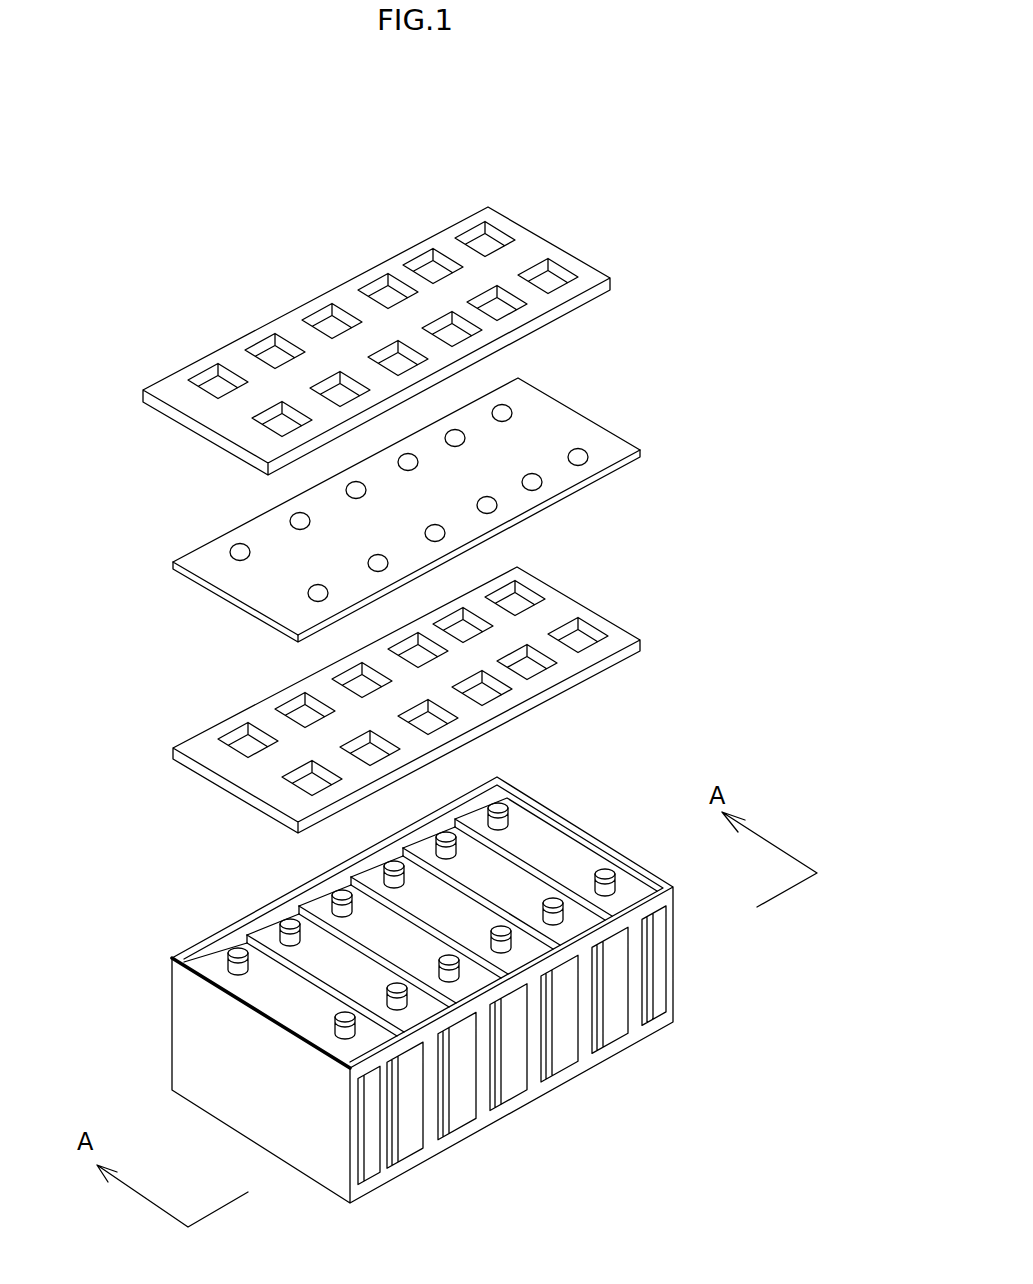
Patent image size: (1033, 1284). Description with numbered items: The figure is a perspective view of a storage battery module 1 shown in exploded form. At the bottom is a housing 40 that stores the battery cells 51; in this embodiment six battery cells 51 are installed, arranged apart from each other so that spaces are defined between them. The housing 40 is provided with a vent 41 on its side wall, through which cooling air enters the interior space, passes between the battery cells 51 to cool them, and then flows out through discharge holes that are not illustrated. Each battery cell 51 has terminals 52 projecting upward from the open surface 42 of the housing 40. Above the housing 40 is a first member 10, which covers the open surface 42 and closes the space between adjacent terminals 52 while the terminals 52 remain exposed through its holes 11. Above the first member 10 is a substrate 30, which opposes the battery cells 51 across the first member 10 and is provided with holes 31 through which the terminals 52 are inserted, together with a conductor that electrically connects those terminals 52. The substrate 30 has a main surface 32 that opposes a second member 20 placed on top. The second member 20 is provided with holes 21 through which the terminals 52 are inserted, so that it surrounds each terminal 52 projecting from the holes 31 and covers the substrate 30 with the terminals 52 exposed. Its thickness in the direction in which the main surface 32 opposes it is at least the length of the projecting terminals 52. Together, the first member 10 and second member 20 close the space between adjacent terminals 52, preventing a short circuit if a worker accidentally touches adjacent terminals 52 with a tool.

The storage battery module 1 is at (366, 230).
The first member 10 is at (639, 649).
The holes of the first member 11 is at (584, 634).
The second member 20 is at (613, 287).
The holes of the second member 21 is at (492, 239).
The substrate 30 is at (644, 460).
The holes of the substrate 31 is at (502, 405).
The main surface of the substrate 32 is at (563, 419).
The housing 40 is at (680, 898).
The vent 41 is at (667, 952).
The open surface of the housing 42 is at (612, 840).
The battery cells 51 is at (535, 838).
The terminals 52 is at (500, 807).